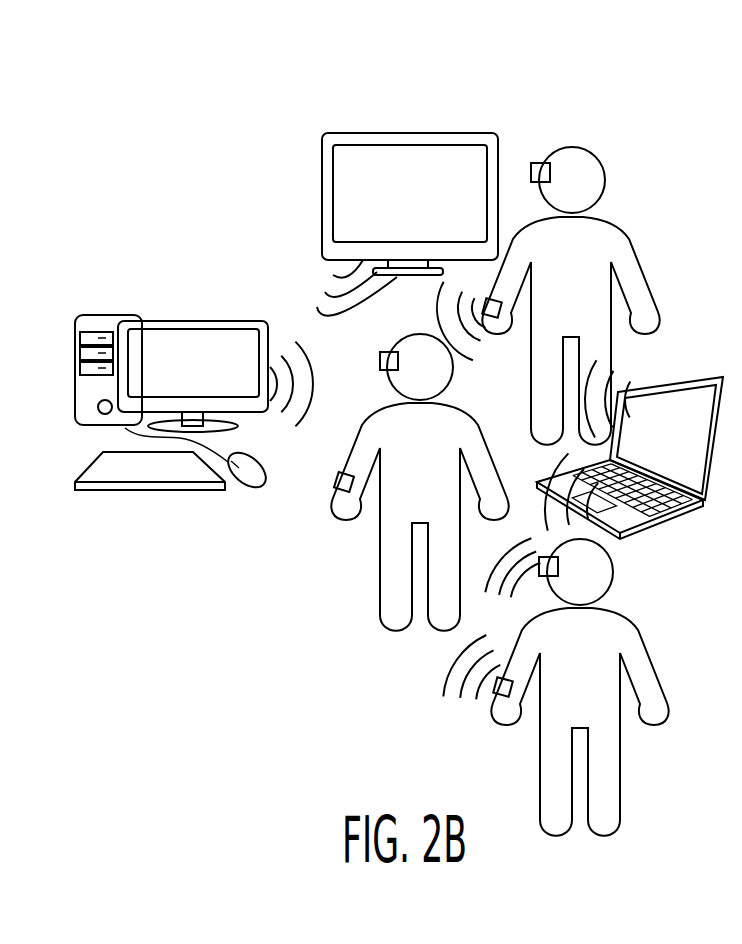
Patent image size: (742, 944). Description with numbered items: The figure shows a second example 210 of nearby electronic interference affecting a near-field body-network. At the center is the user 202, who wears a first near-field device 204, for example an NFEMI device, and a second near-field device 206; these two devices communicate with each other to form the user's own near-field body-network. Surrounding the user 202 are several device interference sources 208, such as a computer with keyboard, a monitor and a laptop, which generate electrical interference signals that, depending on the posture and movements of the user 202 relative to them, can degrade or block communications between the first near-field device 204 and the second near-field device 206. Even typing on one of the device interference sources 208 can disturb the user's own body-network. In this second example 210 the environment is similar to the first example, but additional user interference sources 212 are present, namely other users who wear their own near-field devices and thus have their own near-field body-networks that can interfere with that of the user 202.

The user 202 is at (480, 433).
The first near-field device 204 is at (380, 365).
The second near-field device 206 is at (337, 482).
The device interference sources 208 is at (162, 320).
The second example 210 is at (223, 143).
The user interference sources 212 is at (623, 232).